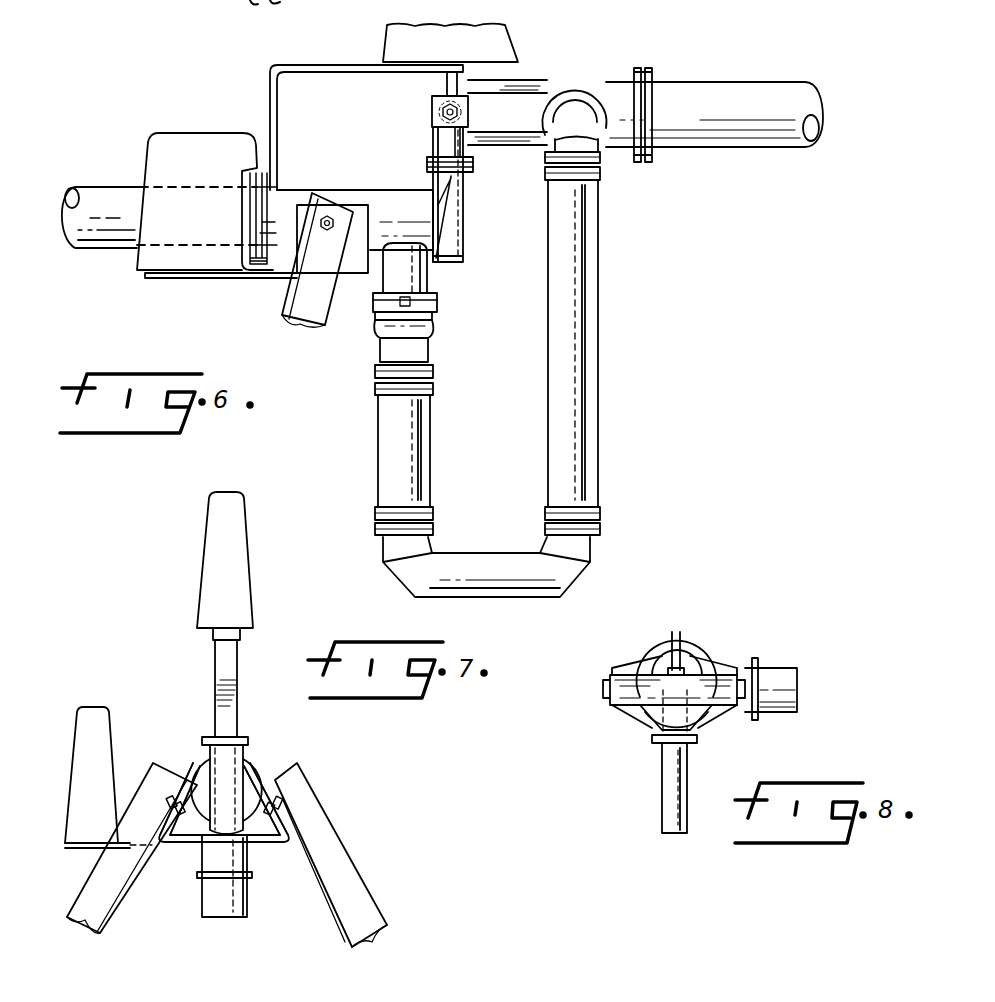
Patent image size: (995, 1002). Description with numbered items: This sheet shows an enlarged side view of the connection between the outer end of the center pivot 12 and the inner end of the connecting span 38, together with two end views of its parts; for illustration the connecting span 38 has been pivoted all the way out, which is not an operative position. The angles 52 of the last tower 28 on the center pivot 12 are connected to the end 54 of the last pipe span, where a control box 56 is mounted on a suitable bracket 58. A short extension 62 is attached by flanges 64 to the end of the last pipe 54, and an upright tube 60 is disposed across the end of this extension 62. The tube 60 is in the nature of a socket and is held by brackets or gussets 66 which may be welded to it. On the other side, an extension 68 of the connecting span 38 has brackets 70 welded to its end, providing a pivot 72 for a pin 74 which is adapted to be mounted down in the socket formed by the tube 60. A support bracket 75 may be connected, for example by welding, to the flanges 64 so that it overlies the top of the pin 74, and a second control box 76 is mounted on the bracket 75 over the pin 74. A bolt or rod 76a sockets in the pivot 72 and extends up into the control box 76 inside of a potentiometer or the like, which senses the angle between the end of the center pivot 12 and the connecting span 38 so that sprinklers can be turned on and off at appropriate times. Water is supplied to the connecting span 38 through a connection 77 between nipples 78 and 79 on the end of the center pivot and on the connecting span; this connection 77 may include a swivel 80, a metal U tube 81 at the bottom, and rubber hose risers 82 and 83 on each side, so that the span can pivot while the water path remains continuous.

In FIG. 6, the center pivot 12 is at (97, 186).
In FIG. 6, the last tower 28 is at (283, 326).
In FIG. 7, the last tower 28 is at (380, 898).
In FIG. 6, the connecting span 38 is at (800, 97).
In FIG. 6, the angles 52 is at (308, 318).
In FIG. 7, the angles 52 is at (75, 920).
In FIG. 6, the end of the last pipe span 54 is at (88, 268).
In FIG. 6, the control box 56 is at (181, 147).
In FIG. 7, the control box 56 is at (90, 712).
In FIG. 6, the bracket 58 is at (222, 279).
In FIG. 7, the bracket 58 is at (70, 848).
In FIG. 6, the tube 60 is at (466, 208).
In FIG. 7, the tube 60 is at (222, 827).
In FIG. 6, the short extension 62 is at (386, 198).
In FIG. 6, the flanges 64 is at (268, 205).
In FIG. 6, the brackets or gussets 66 is at (450, 233).
In FIG. 7, the brackets or gussets 66 is at (205, 770).
In FIG. 6, the extension 68 is at (614, 92).
In FIG. 8, the extension 68 is at (690, 662).
In FIG. 6, the brackets 70 is at (508, 104).
In FIG. 8, the brackets 70 is at (632, 667).
In FIG. 6, the pivot 72 is at (430, 116).
In FIG. 8, the pivot 72 is at (628, 690).
In FIG. 6, the pin 74 is at (463, 150).
In FIG. 8, the pin 74 is at (668, 793).
In FIG. 6, the support bracket 75 is at (355, 66).
In FIG. 7, the support bracket 75 is at (218, 672).
In FIG. 6, the control box 76 is at (505, 36).
In FIG. 7, the control box 76 is at (210, 560).
In FIG. 6, the bolt or rod 76a is at (443, 81).
In FIG. 8, the bolt or rod 76a is at (674, 633).
In FIG. 6, the connection 77 is at (607, 377).
In FIG. 6, the nipple 78 is at (431, 270).
In FIG. 7, the nipple 78 is at (215, 912).
In FIG. 8, the nipple 79 is at (795, 685).
In FIG. 6, the swivel 80 is at (437, 328).
In FIG. 6, the metal U tube 81 is at (495, 560).
In FIG. 6, the rubber hose riser 82 is at (390, 460).
In FIG. 6, the rubber hose riser 83 is at (590, 447).